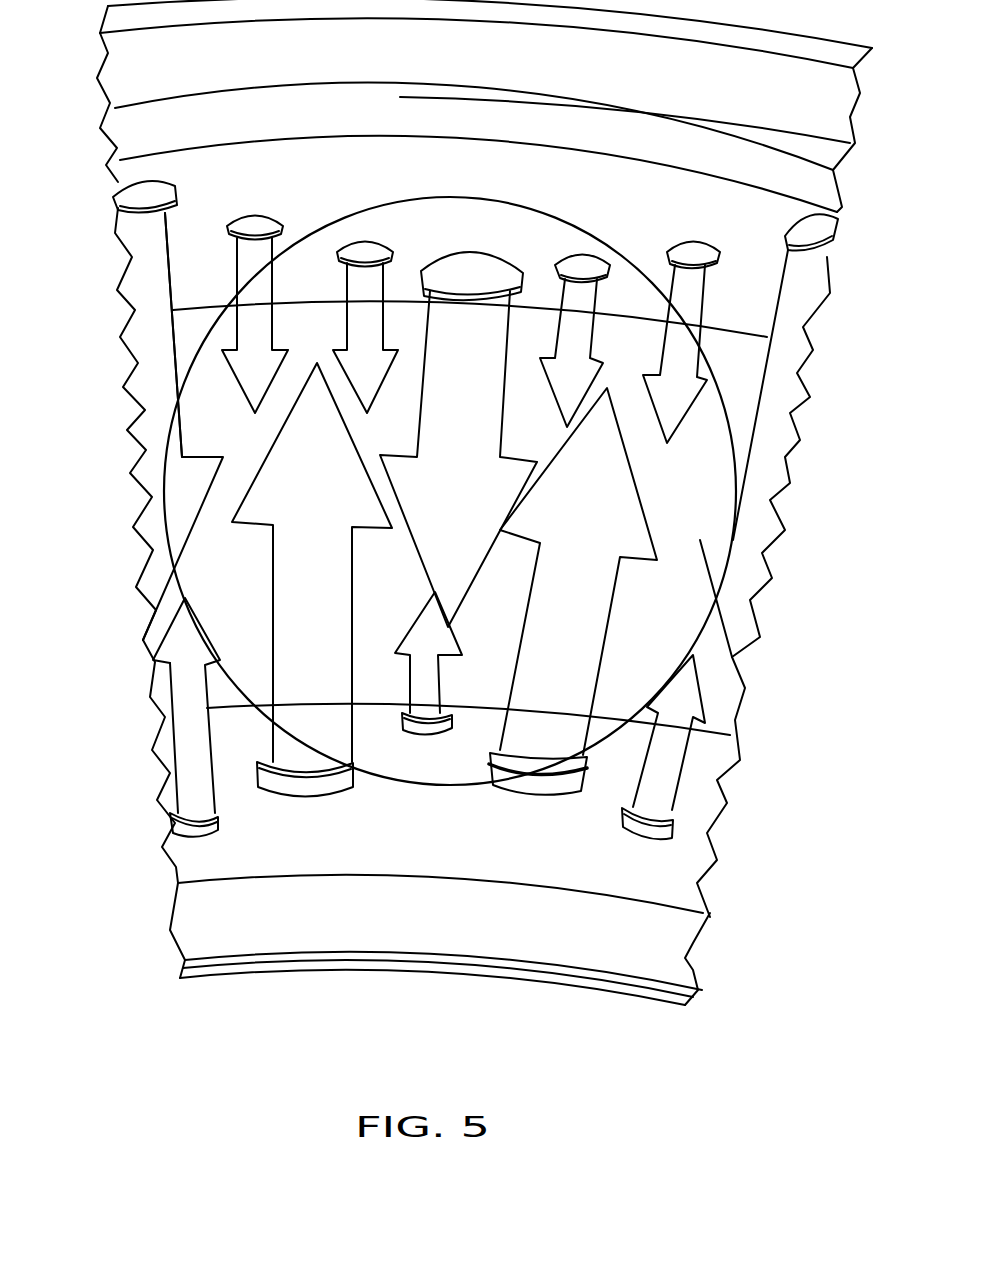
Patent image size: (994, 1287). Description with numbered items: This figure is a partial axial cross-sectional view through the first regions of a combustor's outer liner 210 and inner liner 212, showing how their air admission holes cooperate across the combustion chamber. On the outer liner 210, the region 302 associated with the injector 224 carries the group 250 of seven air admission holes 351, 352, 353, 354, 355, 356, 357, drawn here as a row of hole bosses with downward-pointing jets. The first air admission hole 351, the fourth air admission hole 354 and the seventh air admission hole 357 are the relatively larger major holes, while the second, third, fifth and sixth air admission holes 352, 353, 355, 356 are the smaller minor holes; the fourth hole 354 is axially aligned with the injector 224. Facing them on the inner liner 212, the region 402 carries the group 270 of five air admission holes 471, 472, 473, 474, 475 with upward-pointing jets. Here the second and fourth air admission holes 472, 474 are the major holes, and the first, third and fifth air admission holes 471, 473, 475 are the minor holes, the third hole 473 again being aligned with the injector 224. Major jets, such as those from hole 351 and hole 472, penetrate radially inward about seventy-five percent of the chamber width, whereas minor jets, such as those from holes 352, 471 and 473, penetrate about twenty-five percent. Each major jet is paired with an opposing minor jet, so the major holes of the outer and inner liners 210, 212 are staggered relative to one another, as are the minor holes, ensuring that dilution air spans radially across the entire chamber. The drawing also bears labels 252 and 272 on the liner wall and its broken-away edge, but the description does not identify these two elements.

The outer liner 210 is at (118, 128).
The inner liner 212 is at (178, 880).
The injector 224 is at (310, 230).
The group of air admission holes 250 is at (303, 158).
The separator plate 252 is at (130, 386).
The group of air admission holes 270 is at (262, 858).
The plate break edge 272 is at (170, 650).
The region 302 is at (463, 112).
The first air admission hole 351 is at (123, 184).
The second air admission hole 352 is at (247, 213).
The third air admission hole 353 is at (363, 240).
The fourth air admission hole 354 is at (475, 263).
The fifth air admission hole 355 is at (587, 253).
The sixth air admission hole 356 is at (693, 243).
The seventh air admission hole 357 is at (827, 225).
The region 402 is at (407, 865).
The first air admission hole 471 is at (175, 830).
The second air admission hole 472 is at (317, 790).
The third air admission hole 473 is at (428, 737).
The fourth air admission hole 474 is at (543, 787).
The fifth air admission hole 475 is at (652, 838).